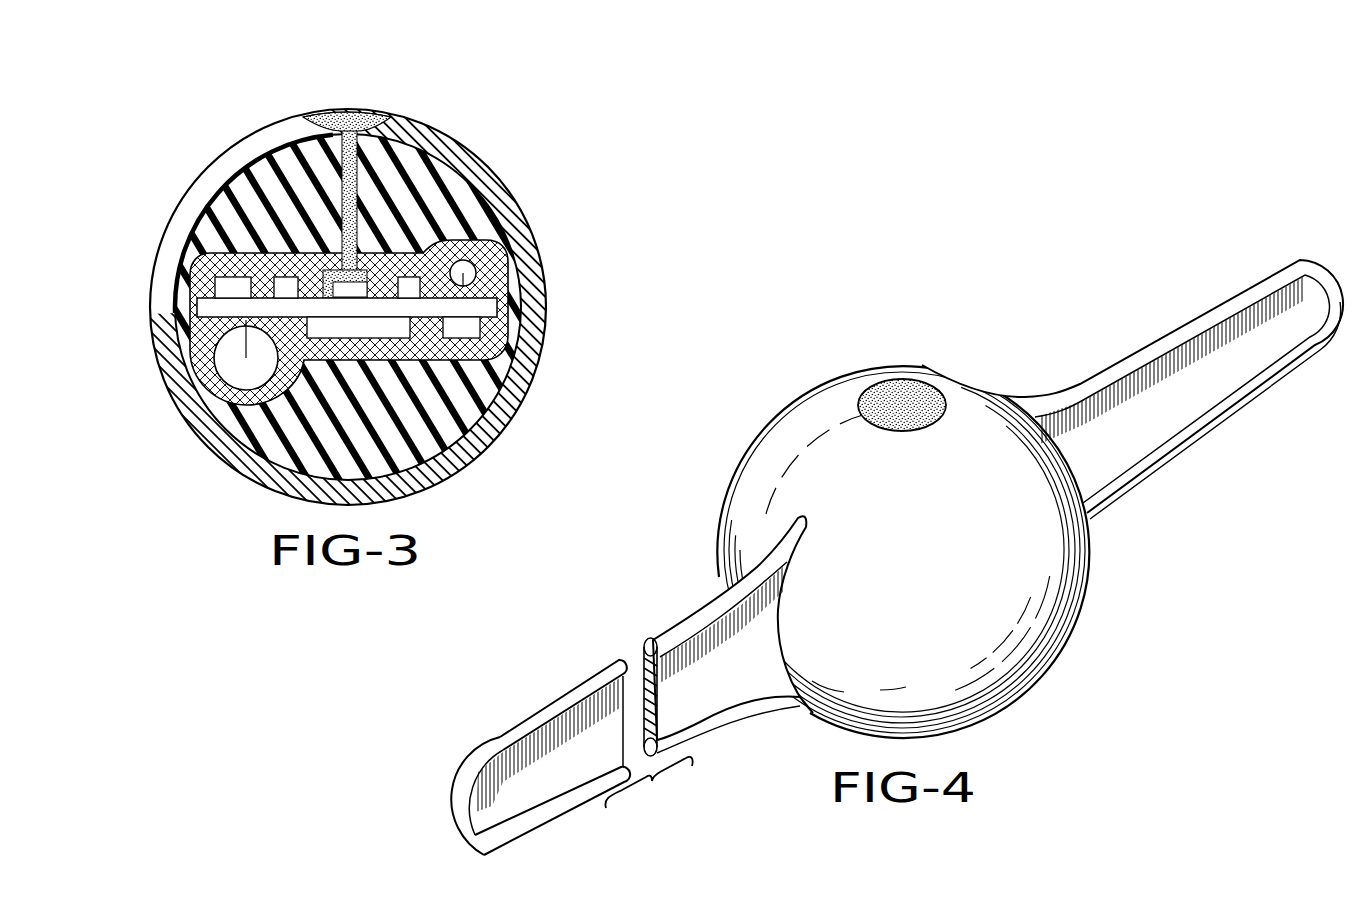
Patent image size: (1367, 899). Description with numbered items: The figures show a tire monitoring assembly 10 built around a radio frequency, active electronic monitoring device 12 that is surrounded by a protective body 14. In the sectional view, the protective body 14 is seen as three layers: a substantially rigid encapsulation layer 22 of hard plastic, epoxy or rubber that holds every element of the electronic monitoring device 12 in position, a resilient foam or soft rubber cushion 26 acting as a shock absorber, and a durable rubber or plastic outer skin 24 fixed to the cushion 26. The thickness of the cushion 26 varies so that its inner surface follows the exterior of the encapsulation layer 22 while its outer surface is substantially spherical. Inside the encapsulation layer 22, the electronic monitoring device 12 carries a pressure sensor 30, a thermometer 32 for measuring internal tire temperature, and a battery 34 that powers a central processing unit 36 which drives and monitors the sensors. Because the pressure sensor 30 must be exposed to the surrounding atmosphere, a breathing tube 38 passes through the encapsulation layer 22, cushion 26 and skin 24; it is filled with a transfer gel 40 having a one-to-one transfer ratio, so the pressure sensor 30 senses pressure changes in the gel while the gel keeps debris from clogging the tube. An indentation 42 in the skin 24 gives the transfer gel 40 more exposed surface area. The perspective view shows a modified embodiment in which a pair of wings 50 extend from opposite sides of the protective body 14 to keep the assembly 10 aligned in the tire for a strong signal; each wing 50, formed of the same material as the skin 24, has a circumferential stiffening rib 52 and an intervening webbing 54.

In FIG. 3, the monitoring assembly 10 is at (204, 136).
In FIG. 4, the monitoring assembly 10 is at (1046, 696).
In FIG. 3, the electronic monitoring device 12 is at (481, 313).
In FIG. 3, the protective body 14 is at (170, 217).
In FIG. 4, the protective body 14 is at (796, 403).
In FIG. 3, the encapsulation layer 22 is at (470, 353).
In FIG. 3, the outer skin 24 is at (487, 437).
In FIG. 4, the outer skin 24 is at (768, 455).
In FIG. 3, the cushion 26 is at (422, 443).
In FIG. 3, the pressure sensor 30 is at (411, 282).
In FIG. 3, the thermometer 32 is at (432, 249).
In FIG. 3, the battery 34 is at (231, 363).
In FIG. 3, the central processing unit (CPU) 36 is at (225, 289).
In FIG. 3, the breathing tube 38 is at (357, 285).
In FIG. 3, the transfer gel 40 is at (339, 116).
In FIG. 4, the transfer gel 40 is at (890, 392).
In FIG. 3, the indentation 42 is at (381, 116).
In FIG. 4, the wings 50 is at (1166, 328).
In FIG. 4, the circumferential stiffening rib 52 is at (1120, 368).
In FIG. 4, the webbing 54 is at (1143, 427).